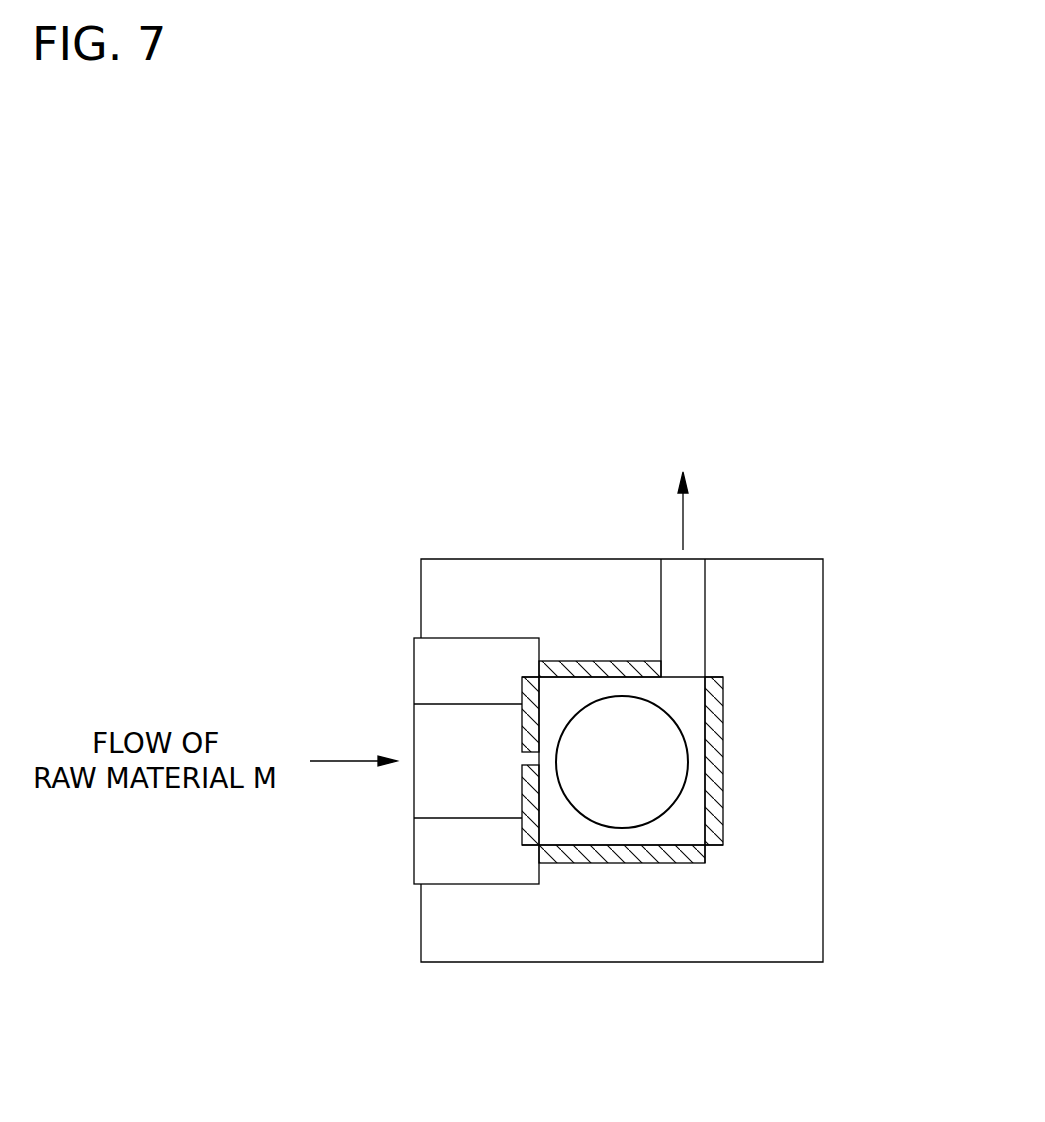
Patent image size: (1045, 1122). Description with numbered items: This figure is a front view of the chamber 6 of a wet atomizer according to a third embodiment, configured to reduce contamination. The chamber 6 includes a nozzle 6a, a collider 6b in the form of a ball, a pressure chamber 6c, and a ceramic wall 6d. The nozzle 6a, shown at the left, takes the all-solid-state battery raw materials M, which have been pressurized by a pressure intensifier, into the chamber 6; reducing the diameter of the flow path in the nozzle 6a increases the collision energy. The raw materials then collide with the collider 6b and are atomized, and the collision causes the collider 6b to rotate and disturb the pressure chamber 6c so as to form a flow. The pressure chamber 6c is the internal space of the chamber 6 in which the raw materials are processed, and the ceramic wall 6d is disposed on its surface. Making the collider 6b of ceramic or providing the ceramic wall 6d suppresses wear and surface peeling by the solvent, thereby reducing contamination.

The chamber 6 is at (800, 617).
The nozzle 6a is at (428, 846).
The collider (ball) 6b is at (633, 802).
The pressure chamber 6c is at (688, 828).
The ceramic wall 6d is at (720, 747).